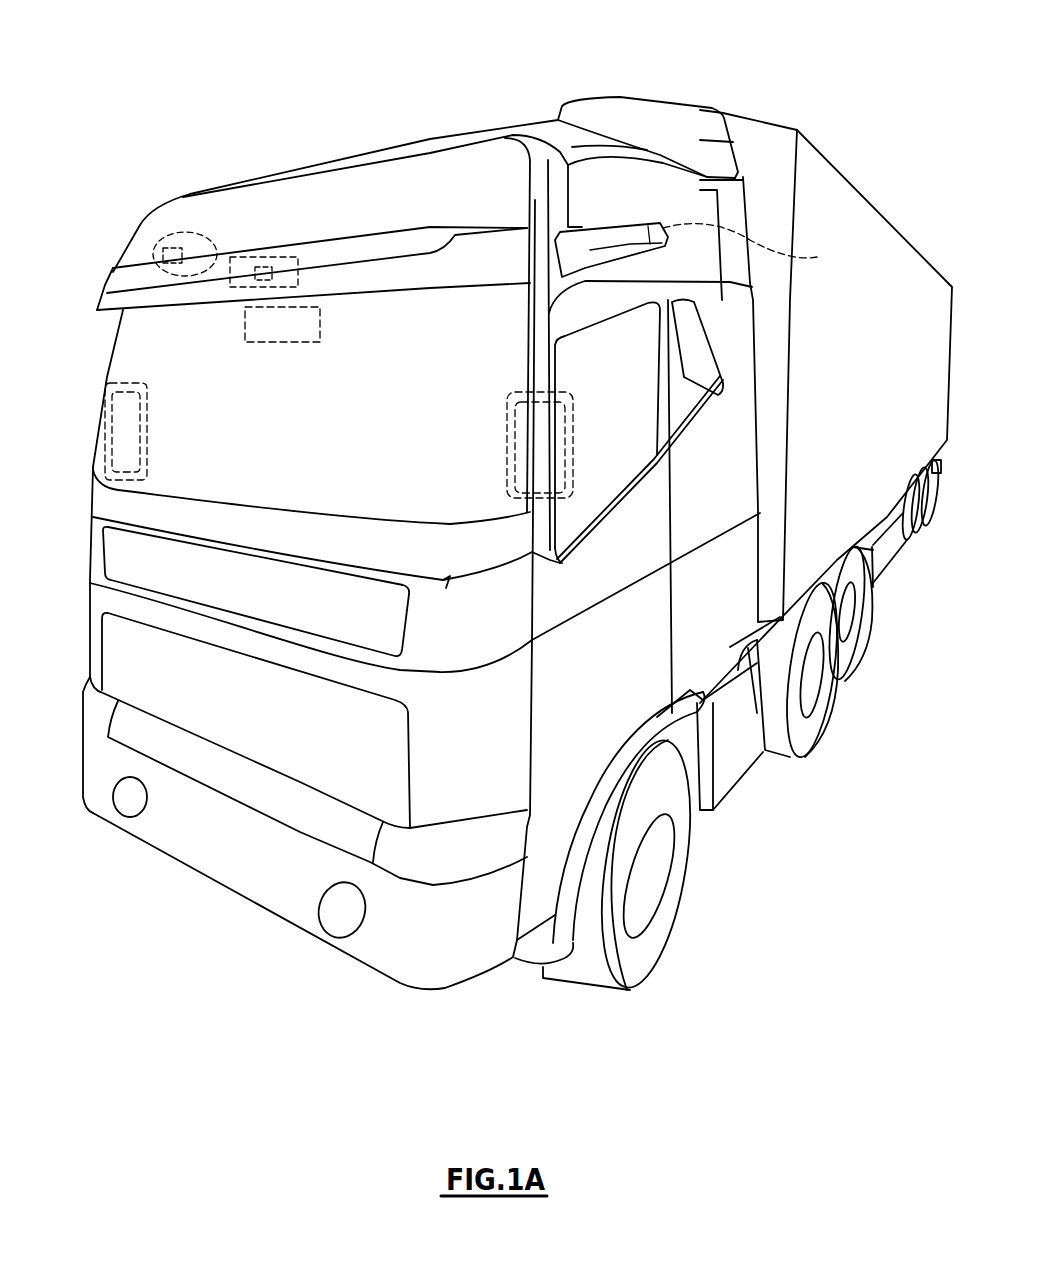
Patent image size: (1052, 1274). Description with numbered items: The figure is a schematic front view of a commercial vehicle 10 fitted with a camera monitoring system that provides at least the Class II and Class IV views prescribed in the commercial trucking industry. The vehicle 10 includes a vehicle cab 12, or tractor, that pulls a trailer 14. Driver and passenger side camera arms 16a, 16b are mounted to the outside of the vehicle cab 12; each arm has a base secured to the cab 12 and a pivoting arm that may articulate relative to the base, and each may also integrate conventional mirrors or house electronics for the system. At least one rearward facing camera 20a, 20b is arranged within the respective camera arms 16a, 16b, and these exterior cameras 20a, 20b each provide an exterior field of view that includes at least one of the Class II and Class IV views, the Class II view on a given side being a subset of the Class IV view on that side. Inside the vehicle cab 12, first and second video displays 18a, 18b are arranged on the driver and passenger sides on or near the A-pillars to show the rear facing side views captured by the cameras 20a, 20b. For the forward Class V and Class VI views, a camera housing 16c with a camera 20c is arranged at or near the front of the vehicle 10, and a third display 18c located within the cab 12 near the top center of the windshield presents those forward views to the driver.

The commercial vehicle 10 is at (882, 66).
The vehicle cab 12 is at (84, 546).
The trailer 14 is at (912, 288).
The driver side camera arm 16a is at (603, 233).
The passenger side camera arm 16b is at (167, 233).
The camera housing 16c is at (258, 252).
The first video display 18a is at (513, 436).
The second video display 18b is at (143, 418).
The third display 18c is at (320, 320).
The rearward facing camera 20a is at (762, 248).
The rearward facing camera 20b is at (143, 227).
The camera 20c is at (253, 282).